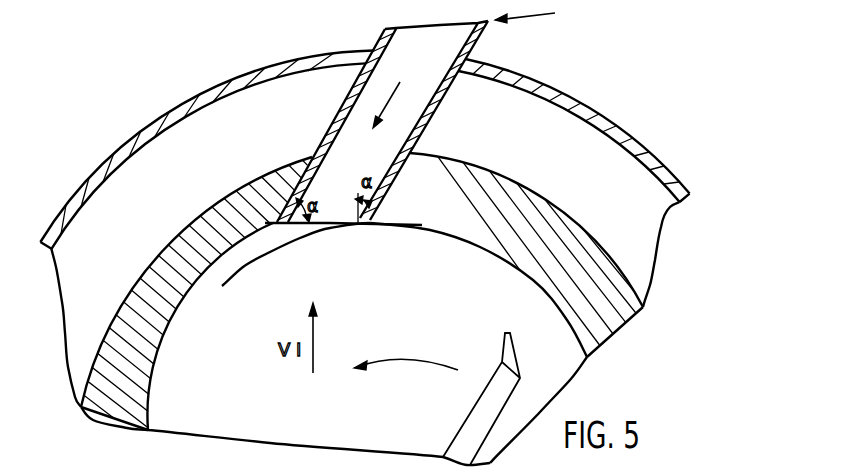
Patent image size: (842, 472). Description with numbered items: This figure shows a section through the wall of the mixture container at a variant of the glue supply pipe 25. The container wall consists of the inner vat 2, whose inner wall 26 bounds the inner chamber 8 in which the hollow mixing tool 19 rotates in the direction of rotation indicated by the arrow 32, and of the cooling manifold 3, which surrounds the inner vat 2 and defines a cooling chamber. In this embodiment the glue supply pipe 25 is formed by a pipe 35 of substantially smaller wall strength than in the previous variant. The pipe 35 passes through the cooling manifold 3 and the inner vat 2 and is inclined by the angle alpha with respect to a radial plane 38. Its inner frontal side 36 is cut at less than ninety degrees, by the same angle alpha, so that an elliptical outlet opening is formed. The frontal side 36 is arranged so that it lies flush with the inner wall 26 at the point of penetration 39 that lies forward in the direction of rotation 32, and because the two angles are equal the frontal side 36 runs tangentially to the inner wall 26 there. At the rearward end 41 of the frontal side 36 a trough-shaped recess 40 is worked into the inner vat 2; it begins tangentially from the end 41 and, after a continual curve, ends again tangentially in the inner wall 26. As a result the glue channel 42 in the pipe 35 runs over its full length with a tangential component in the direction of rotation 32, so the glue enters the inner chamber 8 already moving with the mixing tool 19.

The inner vat 2 is at (597, 260).
The cooling manifold 3 is at (574, 107).
The inner chamber 8 is at (217, 407).
The mixing tool 19 is at (510, 368).
The glue supply pipe 25 is at (539, 12).
The inner wall 26 is at (480, 248).
The direction of rotation 32 is at (403, 360).
The pipe 35 is at (470, 53).
The frontal side 36 is at (358, 227).
The radial plane 38 is at (330, 227).
The point of penetration 39 is at (397, 227).
The trough-shaped recess 40 is at (208, 288).
The end of the frontal side 41 is at (232, 226).
The glue channel 42 is at (382, 47).